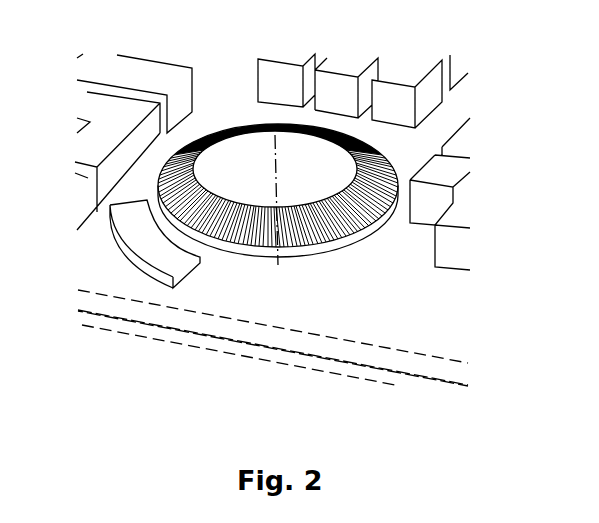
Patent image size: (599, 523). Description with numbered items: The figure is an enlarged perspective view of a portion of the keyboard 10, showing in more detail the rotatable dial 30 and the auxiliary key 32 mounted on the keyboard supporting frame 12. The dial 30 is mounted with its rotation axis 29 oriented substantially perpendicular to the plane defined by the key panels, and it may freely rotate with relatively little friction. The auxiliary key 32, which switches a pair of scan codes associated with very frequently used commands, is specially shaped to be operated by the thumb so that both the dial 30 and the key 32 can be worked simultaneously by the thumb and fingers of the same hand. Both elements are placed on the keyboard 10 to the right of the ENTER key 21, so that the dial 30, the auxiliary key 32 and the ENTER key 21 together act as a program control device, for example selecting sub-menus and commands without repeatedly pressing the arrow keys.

The keyboard 10 is at (138, 368).
The keyboard supporting frame 12 is at (132, 280).
The ENTER key 21 is at (122, 113).
The rotation axis 29 is at (272, 163).
The rotatable dial 30 is at (257, 155).
The auxiliary key 32 is at (170, 257).